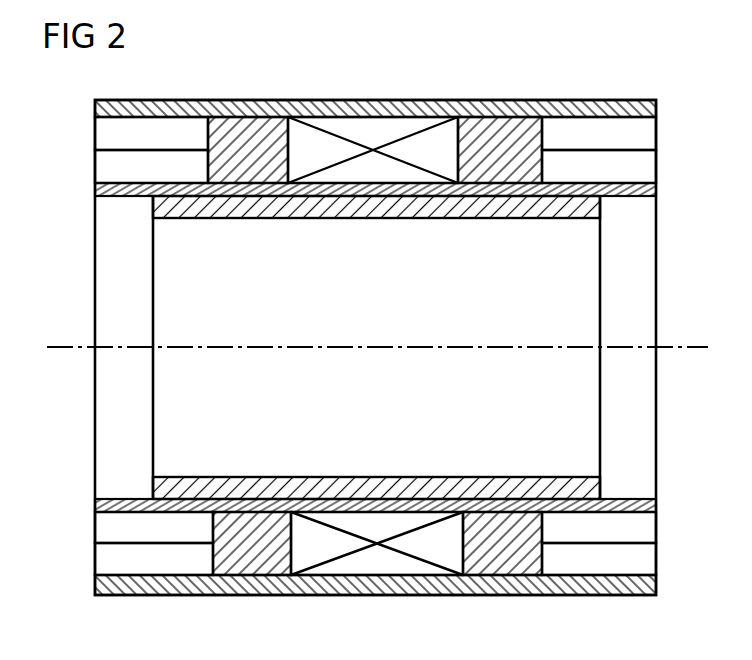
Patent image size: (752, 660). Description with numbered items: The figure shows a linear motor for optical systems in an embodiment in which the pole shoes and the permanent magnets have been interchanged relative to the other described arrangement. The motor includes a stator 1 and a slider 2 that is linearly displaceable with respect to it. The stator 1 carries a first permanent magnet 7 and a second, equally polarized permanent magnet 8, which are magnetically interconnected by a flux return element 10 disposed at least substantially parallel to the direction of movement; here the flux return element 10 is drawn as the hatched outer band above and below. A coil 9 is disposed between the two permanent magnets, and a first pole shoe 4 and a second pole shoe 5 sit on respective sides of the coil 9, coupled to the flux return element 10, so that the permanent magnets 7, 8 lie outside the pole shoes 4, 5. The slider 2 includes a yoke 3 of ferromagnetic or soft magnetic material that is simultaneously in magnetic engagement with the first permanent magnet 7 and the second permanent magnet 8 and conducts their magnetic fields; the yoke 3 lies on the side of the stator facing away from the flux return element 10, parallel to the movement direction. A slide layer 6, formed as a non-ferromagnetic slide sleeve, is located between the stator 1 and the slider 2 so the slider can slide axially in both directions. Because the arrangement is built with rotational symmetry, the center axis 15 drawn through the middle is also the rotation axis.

The stator 1 is at (375, 372).
The slider 2 is at (418, 347).
The yoke 3 is at (383, 487).
The first pole shoe 4 is at (247, 566).
The second pole shoe 5 is at (503, 566).
The slide layer 6 is at (96, 505).
The first permanent magnet 7 is at (181, 565).
The second permanent magnet 8 is at (578, 565).
The coil 9 is at (387, 568).
The flux return element 10 is at (340, 592).
The center axis 15 is at (57, 350).